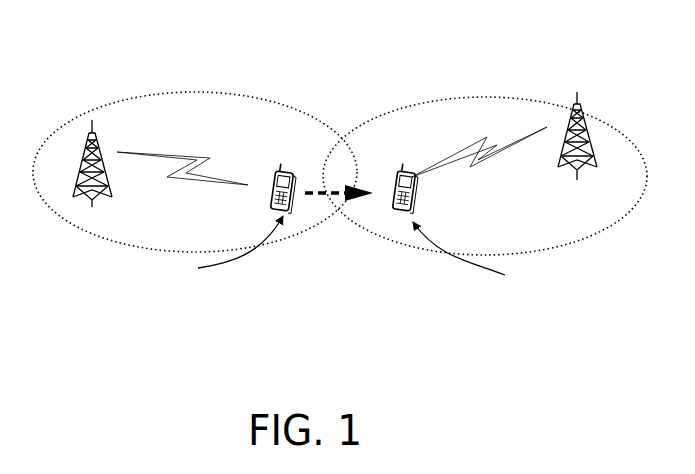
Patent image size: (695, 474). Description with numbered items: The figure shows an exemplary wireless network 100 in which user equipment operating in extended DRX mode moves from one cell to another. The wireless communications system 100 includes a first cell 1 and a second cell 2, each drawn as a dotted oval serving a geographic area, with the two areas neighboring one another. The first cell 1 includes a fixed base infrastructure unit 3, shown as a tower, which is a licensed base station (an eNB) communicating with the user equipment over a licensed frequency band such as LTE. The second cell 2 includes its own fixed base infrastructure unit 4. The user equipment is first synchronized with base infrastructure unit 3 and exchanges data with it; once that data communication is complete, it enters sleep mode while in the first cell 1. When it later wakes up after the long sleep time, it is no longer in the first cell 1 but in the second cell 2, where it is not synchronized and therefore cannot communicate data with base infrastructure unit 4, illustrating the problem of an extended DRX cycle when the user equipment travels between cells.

The wireless network 100 is at (79, 92).
The first cell 1 is at (201, 92).
The second cell 2 is at (480, 98).
The fixed base infrastructure unit 3 is at (92, 126).
The fixed base infrastructure unit 4 is at (578, 93).